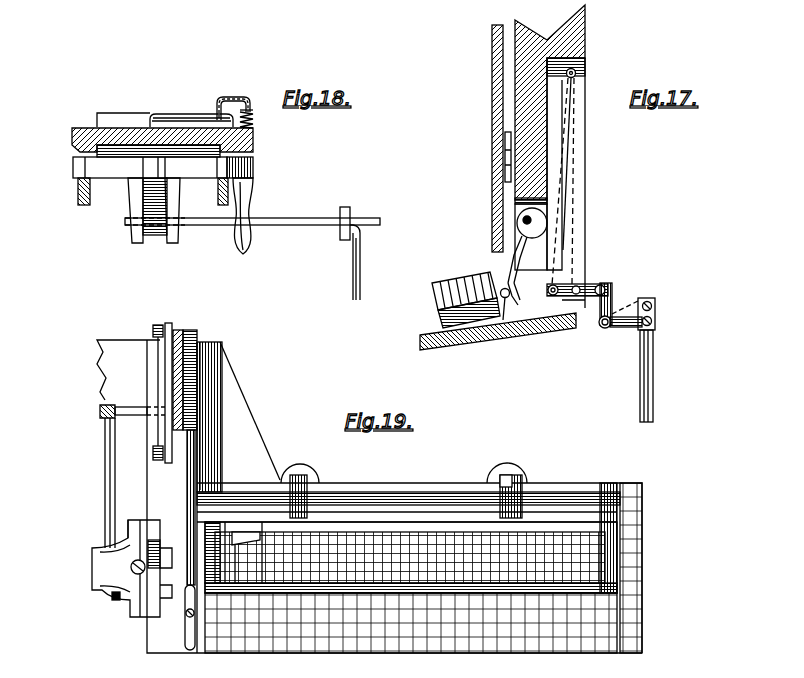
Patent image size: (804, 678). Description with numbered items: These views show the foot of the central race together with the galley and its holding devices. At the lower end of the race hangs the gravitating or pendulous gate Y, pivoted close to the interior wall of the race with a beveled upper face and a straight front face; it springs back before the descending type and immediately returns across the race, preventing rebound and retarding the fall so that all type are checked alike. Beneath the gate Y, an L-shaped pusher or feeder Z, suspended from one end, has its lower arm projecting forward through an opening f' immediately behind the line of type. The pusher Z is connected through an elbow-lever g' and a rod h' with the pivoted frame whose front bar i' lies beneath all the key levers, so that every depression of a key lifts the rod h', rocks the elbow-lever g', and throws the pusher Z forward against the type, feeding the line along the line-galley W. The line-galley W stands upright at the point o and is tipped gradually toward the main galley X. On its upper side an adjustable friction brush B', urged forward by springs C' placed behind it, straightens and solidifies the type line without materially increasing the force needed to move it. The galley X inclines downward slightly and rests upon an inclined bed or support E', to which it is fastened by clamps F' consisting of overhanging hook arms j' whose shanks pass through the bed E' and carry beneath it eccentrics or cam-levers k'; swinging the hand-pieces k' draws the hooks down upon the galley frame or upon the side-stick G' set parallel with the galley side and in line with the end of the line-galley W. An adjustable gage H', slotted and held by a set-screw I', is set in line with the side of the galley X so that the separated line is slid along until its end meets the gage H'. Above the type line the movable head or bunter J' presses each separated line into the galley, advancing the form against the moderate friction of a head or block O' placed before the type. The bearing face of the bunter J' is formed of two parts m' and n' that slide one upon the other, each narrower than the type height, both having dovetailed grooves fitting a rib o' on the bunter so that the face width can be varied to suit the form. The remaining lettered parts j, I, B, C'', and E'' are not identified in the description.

In FIG. 18, the galley X is at (133, 110).
In FIG. 19, the galley X is at (411, 557).
In FIG. 18, the inclined bed or support E' is at (143, 142).
In FIG. 18, the hook tube j is at (244, 99).
In FIG. 18, the front bar of lever A' i' is at (264, 132).
In FIG. 18, the clamps F' is at (174, 200).
In FIG. 18, the eccentrics or cam-levers k' is at (252, 239).
In FIG. 17, the upright point of line-galley o is at (482, 138).
In FIG. 17, the slot I is at (486, 157).
In FIG. 17, the block B is at (550, 156).
In FIG. 17, the gravitating or pendulous gate Y is at (518, 224).
In FIG. 17, the pusher or feeder Z is at (566, 289).
In FIG. 17, the opening f' is at (498, 323).
In FIG. 17, the elbow-lever g' is at (619, 318).
In FIG. 17, the rod h' is at (659, 376).
In FIG. 19, the springs C' is at (165, 382).
In FIG. 19, the brush B' is at (196, 371).
In FIG. 19, the strip C'' is at (172, 507).
In FIG. 19, the line-galley W is at (230, 366).
In FIG. 19, the base plate E'' is at (419, 568).
In FIG. 19, the set-screw I' is at (408, 554).
In FIG. 19, the side-stick G' is at (311, 550).
In FIG. 19, the head or block O' is at (274, 552).
In FIG. 19, the hooks or overhanging arms j' is at (423, 488).
In FIG. 19, the movable head or bunter J' is at (107, 568).
In FIG. 19, the bearing-face part m' is at (145, 531).
In FIG. 19, the bearing-face part n' is at (173, 553).
In FIG. 19, the rib o' is at (171, 597).
In FIG. 19, the adjustable gage H' is at (147, 620).